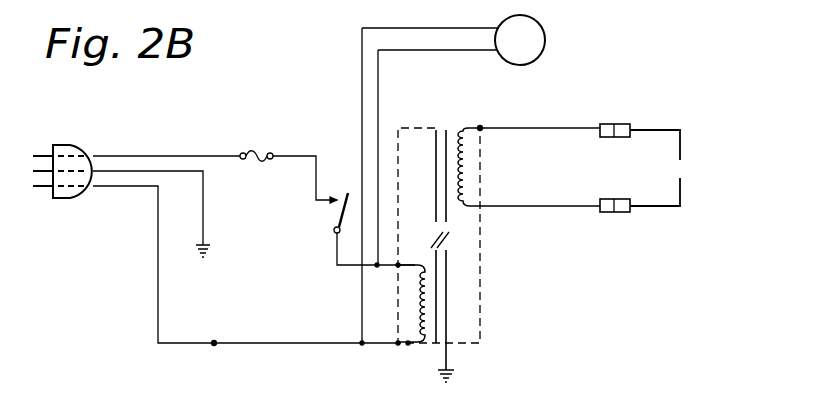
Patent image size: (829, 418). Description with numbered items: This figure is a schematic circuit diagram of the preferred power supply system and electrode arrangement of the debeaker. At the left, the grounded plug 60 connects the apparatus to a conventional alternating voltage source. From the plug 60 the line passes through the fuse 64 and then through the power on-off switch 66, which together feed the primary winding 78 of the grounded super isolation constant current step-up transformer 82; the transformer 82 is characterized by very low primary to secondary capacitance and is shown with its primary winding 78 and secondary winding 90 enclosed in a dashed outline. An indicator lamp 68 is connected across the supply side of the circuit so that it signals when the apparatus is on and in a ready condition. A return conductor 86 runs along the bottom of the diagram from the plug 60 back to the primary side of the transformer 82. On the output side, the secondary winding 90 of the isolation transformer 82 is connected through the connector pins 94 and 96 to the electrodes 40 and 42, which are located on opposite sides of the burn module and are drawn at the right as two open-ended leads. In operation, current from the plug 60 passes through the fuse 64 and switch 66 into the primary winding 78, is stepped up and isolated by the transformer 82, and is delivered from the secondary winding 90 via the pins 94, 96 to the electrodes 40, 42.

The grounded plug 60 is at (68, 145).
The fuse 64 is at (258, 150).
The power on-off switch 66 is at (340, 210).
The indicator lamp 68 is at (545, 37).
The secondary winding 90 is at (466, 127).
The connector pin 94 is at (612, 124).
The connector pin 96 is at (622, 212).
The electrode 40 is at (682, 140).
The electrode 42 is at (682, 190).
The super isolation constant current step-up transformer 82 is at (480, 288).
The ground return line 86 is at (214, 343).
The primary winding 78 is at (408, 345).